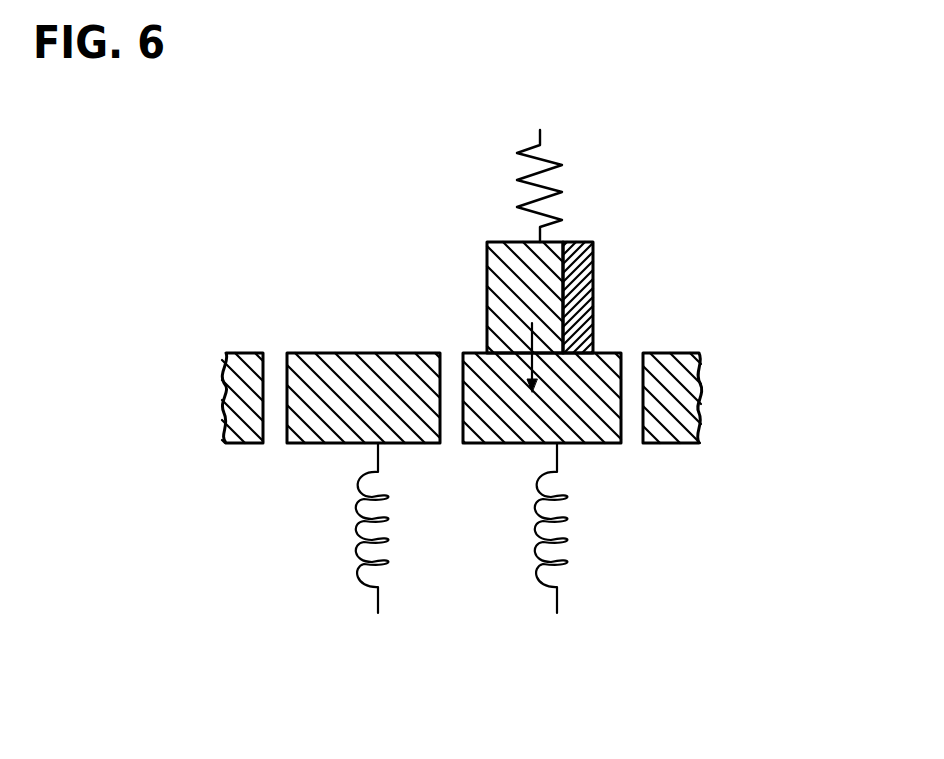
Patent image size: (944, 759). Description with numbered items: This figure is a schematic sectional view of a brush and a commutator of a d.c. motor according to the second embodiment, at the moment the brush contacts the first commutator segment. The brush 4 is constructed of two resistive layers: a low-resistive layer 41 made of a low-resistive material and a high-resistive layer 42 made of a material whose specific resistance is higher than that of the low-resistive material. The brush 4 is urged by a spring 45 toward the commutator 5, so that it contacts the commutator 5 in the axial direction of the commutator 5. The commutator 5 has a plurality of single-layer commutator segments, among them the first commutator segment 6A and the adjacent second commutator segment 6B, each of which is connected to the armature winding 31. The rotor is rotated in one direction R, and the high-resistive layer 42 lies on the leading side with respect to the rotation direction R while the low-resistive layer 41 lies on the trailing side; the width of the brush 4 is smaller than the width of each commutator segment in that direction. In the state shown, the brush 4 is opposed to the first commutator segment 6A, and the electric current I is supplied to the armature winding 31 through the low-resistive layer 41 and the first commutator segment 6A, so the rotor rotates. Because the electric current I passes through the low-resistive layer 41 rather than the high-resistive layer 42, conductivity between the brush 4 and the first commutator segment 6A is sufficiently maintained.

The brush 4 is at (560, 276).
The low-resistive layer 41 is at (507, 275).
The high-resistive layer 42 is at (592, 307).
The spring 45 is at (564, 166).
The commutator 5 is at (716, 394).
The first commutator segment 6A is at (614, 461).
The second commutator segment 6B is at (307, 461).
The armature winding 31 is at (557, 602).
The electric current I is at (525, 345).
The rotation direction R is at (482, 472).